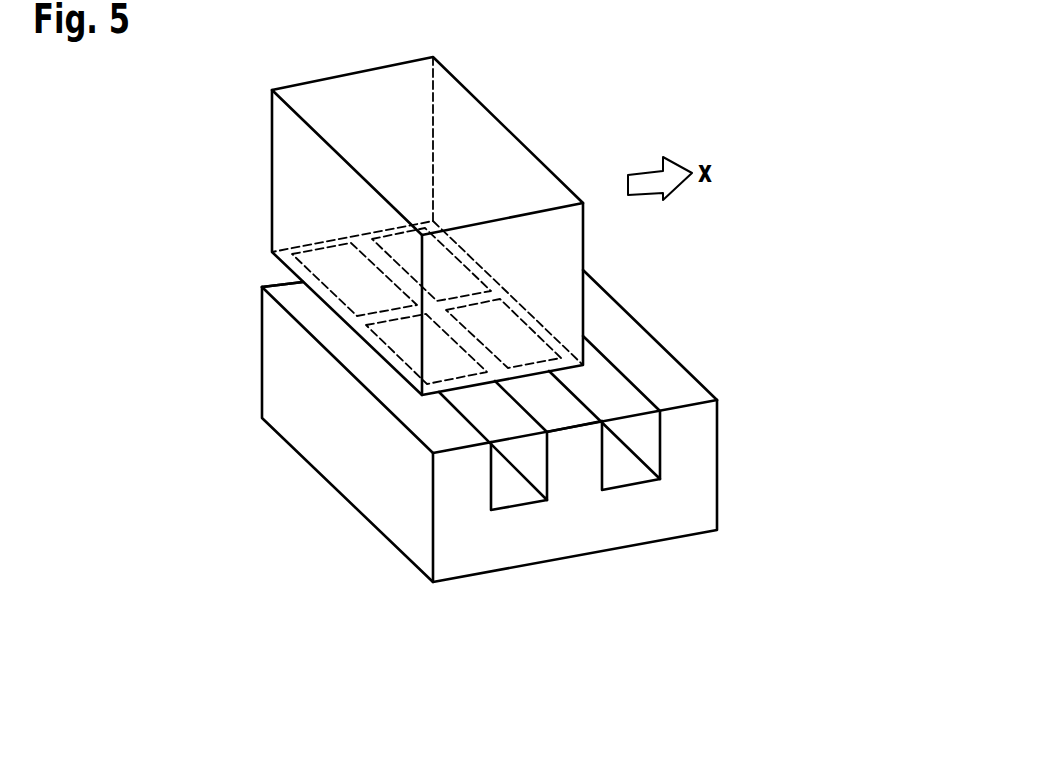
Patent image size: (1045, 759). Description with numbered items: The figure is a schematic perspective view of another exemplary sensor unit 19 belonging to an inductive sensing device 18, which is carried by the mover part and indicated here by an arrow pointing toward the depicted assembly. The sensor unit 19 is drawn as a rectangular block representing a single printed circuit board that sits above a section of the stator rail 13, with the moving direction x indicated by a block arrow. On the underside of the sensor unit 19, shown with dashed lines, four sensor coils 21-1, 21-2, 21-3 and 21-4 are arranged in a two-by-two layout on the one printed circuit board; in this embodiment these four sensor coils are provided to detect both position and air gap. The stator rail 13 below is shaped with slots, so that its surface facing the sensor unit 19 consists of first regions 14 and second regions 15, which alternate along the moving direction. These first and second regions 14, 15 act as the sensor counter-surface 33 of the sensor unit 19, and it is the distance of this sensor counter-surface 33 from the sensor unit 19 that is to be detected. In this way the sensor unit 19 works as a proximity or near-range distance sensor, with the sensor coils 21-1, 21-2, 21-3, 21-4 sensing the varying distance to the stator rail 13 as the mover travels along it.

The stator rail 13 is at (703, 493).
The first regions 14 is at (703, 428).
The second regions 15 is at (635, 488).
The inductive sensing device 18 is at (645, 96).
The sensor unit 19 is at (473, 94).
The sensor coil 21-1 is at (507, 328).
The sensor coil 21-2 is at (413, 332).
The sensor coil 21-3 is at (378, 250).
The sensor coil 21-4 is at (347, 278).
The sensor counter-surface 33 is at (248, 282).